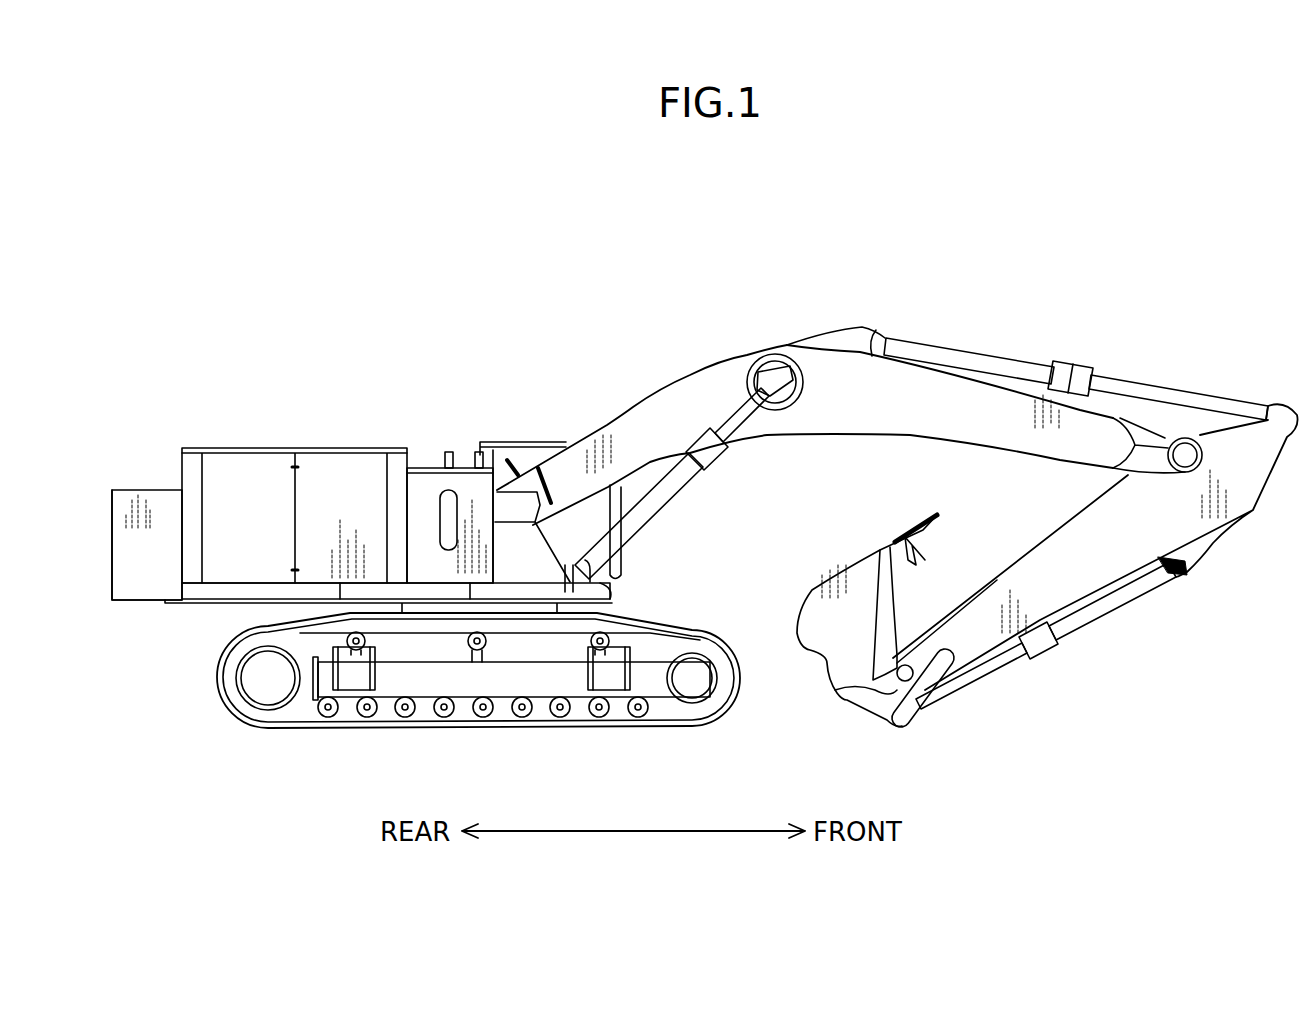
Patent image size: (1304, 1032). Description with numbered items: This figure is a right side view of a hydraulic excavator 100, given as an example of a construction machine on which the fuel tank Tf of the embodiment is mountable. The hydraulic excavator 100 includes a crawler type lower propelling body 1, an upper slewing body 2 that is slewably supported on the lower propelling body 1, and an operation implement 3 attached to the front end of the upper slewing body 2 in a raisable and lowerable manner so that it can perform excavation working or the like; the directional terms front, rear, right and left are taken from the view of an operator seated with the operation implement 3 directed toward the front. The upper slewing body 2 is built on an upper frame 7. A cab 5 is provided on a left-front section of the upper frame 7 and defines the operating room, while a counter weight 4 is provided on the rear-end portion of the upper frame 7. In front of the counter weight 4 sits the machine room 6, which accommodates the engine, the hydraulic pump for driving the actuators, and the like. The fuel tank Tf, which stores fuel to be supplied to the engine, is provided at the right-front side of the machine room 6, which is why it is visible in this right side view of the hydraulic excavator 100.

The hydraulic excavator 100 is at (164, 353).
The lower propelling body 1 is at (694, 622).
The upper slewing body 2 is at (641, 545).
The operation implement 3 is at (892, 335).
The counter weight 4 is at (150, 516).
The cab 5 is at (528, 458).
The machine room 6 is at (328, 446).
The upper frame 7 is at (215, 605).
The fuel tank Tf is at (428, 487).